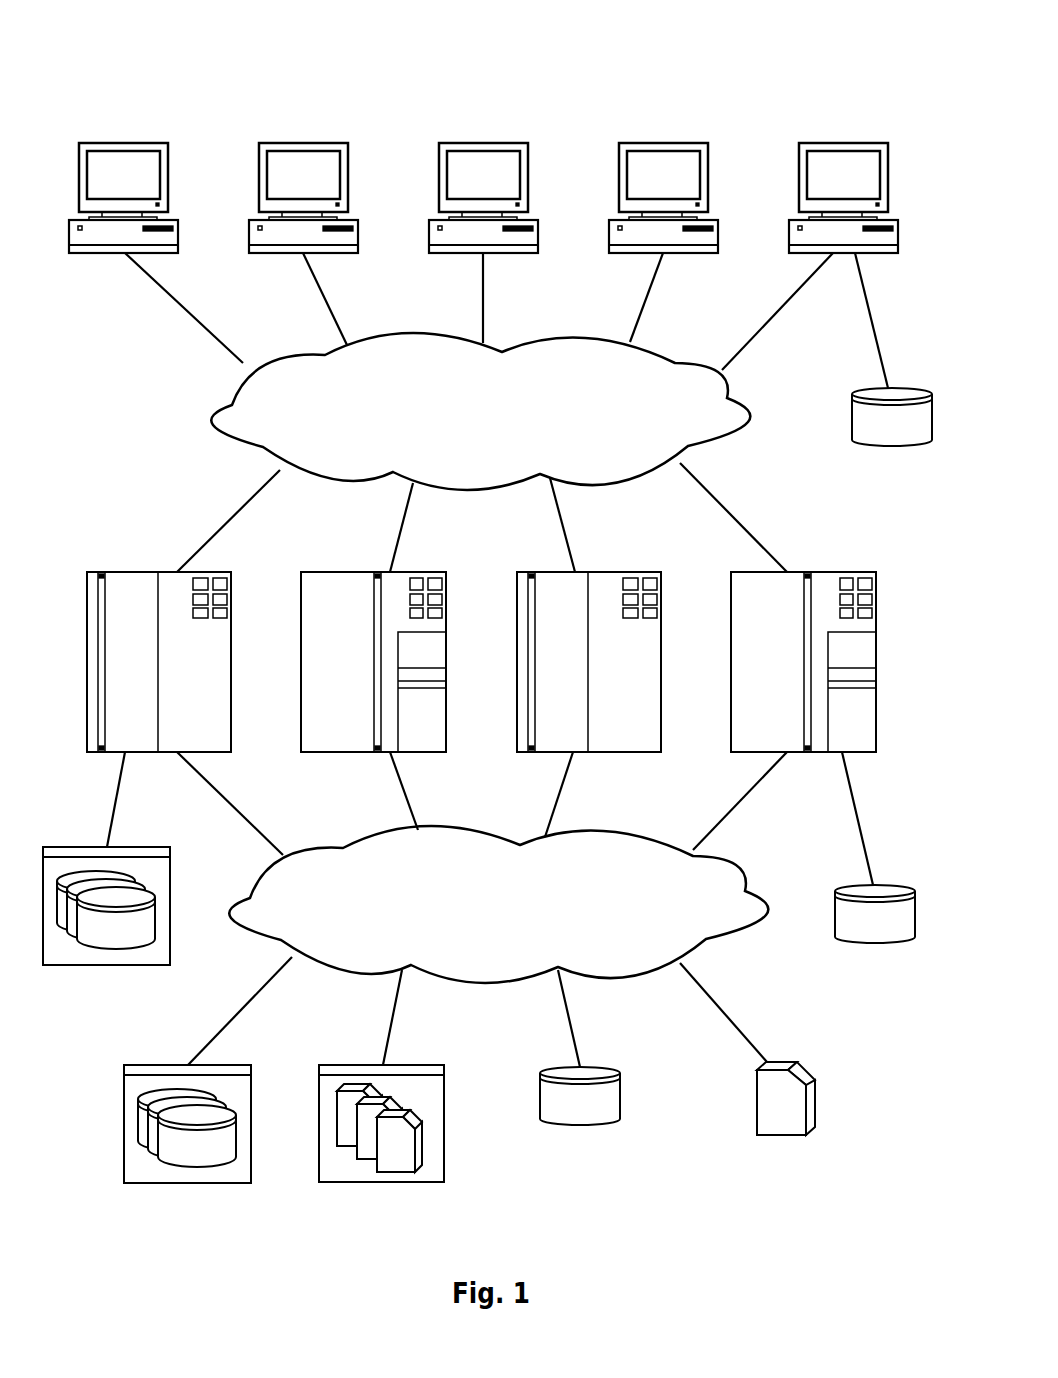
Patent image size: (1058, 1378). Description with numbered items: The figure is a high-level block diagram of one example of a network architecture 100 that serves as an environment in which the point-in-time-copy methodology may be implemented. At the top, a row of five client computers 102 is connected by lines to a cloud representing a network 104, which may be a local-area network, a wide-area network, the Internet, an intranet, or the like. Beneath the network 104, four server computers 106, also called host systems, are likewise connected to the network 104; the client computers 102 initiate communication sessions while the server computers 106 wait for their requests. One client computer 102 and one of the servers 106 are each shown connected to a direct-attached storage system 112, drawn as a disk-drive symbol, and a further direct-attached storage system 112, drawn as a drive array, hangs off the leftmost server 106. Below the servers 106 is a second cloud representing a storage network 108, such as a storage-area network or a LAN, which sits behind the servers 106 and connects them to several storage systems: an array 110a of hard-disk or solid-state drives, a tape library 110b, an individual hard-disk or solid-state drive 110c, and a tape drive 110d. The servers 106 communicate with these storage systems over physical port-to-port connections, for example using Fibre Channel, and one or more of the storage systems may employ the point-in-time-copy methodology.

The network architecture 100 is at (200, 72).
The client computers 102 is at (862, 186).
The network 104 is at (663, 431).
The server computers 106 is at (792, 672).
The storage-area-network (SAN) 108 is at (643, 921).
The arrays of hard-disk drives or solid-state drives 110a is at (187, 1183).
The tape libraries 110b is at (383, 1183).
The individual hard-disk drives or solid-state drives 110c is at (577, 1130).
The tape drives 110d is at (780, 1136).
The direct-attached storage systems 112 is at (893, 444).